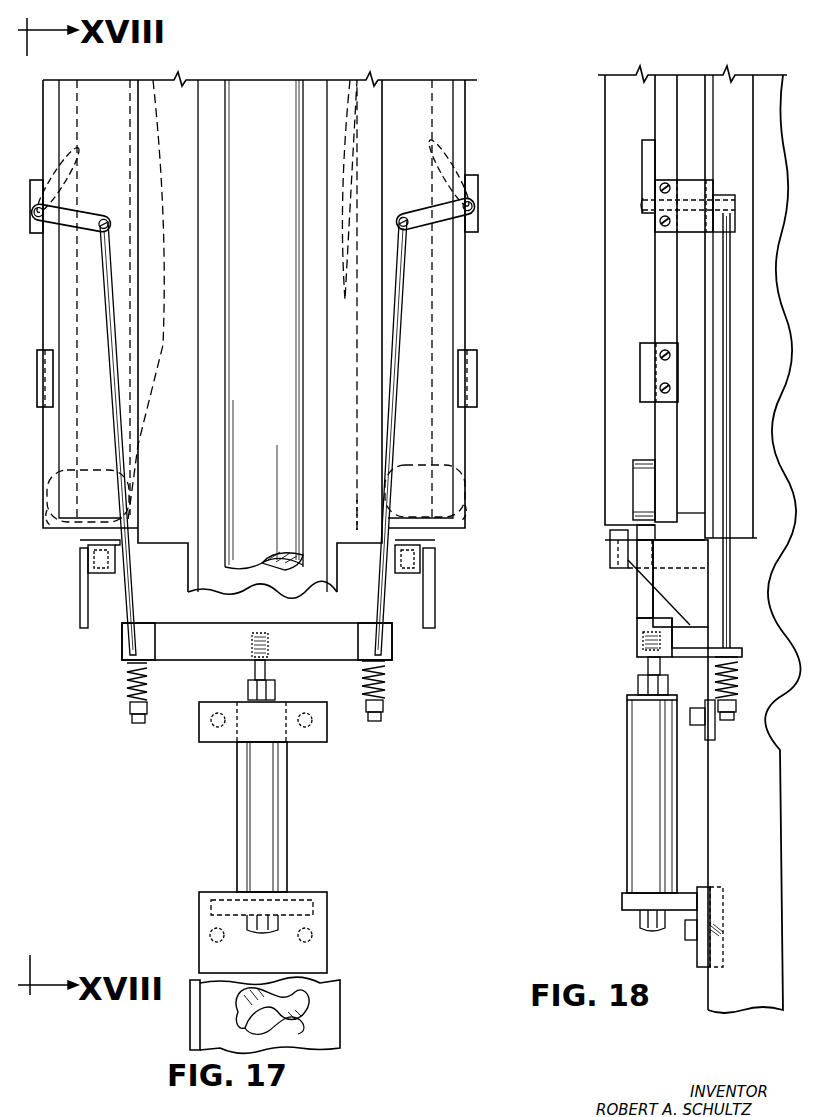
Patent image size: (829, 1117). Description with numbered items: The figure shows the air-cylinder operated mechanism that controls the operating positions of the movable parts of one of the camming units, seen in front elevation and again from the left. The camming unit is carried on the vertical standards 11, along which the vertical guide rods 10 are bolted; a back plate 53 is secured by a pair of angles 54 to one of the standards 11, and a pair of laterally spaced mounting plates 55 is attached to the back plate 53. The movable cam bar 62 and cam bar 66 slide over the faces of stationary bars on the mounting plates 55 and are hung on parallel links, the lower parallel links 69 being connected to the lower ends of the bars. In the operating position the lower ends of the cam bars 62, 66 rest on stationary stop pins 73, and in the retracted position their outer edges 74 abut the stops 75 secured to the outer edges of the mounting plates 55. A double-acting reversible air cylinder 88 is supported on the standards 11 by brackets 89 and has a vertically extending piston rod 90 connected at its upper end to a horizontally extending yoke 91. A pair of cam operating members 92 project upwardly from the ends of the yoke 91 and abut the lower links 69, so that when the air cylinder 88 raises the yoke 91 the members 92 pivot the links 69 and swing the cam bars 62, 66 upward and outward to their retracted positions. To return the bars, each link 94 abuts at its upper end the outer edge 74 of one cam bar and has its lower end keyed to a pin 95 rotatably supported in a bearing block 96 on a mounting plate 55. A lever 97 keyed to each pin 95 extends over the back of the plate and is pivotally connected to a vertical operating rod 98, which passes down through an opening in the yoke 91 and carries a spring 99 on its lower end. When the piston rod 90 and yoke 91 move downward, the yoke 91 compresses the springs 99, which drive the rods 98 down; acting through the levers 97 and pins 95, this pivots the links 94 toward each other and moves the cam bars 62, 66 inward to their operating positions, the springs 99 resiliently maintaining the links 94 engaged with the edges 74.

In FIG. 17, the vertical guide rods 10 is at (302, 82).
In FIG. 18, the vertical standards 11 is at (708, 822).
In FIG. 17, the back plate 53 is at (60, 460).
In FIG. 18, the back plate 53 is at (698, 74).
In FIG. 18, the angles 54 is at (753, 152).
In FIG. 17, the mounting plates 55 is at (46, 314).
In FIG. 18, the mounting plates 55 is at (655, 118).
In FIG. 17, the cam bar 62 is at (140, 414).
In FIG. 18, the cam bar 62 is at (605, 412).
In FIG. 17, the cam bar 66 is at (358, 530).
In FIG. 17, the lower parallel links 69 is at (48, 502).
In FIG. 18, the lower parallel links 69 is at (644, 460).
In FIG. 17, the stationary stop pins 73 is at (88, 544).
In FIG. 18, the stationary stop pins 73 is at (610, 536).
In FIG. 17, the outer edges 74 is at (433, 304).
In FIG. 17, the stops 75 is at (36, 402).
In FIG. 18, the stops 75 is at (640, 400).
In FIG. 17, the air cylinder 88 is at (287, 798).
In FIG. 18, the air cylinder 88 is at (627, 766).
In FIG. 17, the brackets 89 is at (232, 744).
In FIG. 18, the brackets 89 is at (712, 736).
In FIG. 17, the piston rod 90 is at (268, 670).
In FIG. 18, the piston rod 90 is at (648, 666).
In FIG. 17, the yoke 91 is at (280, 622).
In FIG. 18, the yoke 91 is at (637, 638).
In FIG. 17, the cam operating members 92 is at (122, 614).
In FIG. 18, the cam operating members 92 is at (637, 590).
In FIG. 17, the links 94 is at (76, 160).
In FIG. 18, the links 94 is at (642, 180).
In FIG. 17, the pin 95 is at (474, 208).
In FIG. 18, the pin 95 is at (640, 212).
In FIG. 17, the bearing block 96 is at (38, 236).
In FIG. 18, the bearing block 96 is at (690, 176).
In FIG. 17, the lever 97 is at (68, 228).
In FIG. 18, the lever 97 is at (736, 216).
In FIG. 17, the operating rod 98 is at (122, 452).
In FIG. 18, the operating rod 98 is at (730, 584).
In FIG. 17, the springs 99 is at (130, 700).
In FIG. 18, the springs 99 is at (738, 676).